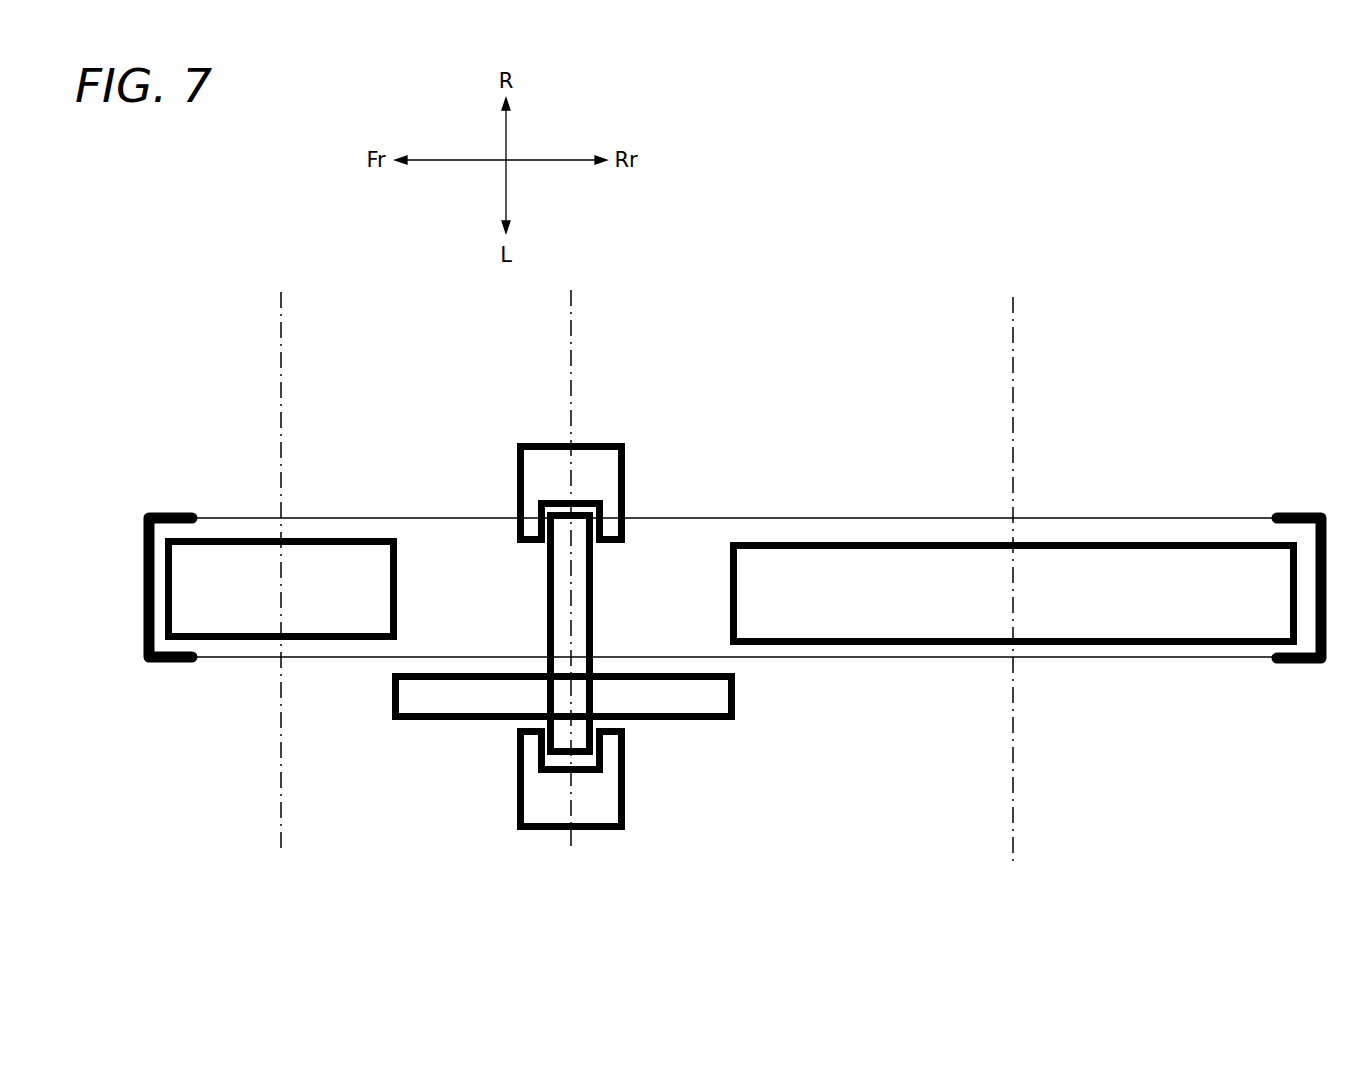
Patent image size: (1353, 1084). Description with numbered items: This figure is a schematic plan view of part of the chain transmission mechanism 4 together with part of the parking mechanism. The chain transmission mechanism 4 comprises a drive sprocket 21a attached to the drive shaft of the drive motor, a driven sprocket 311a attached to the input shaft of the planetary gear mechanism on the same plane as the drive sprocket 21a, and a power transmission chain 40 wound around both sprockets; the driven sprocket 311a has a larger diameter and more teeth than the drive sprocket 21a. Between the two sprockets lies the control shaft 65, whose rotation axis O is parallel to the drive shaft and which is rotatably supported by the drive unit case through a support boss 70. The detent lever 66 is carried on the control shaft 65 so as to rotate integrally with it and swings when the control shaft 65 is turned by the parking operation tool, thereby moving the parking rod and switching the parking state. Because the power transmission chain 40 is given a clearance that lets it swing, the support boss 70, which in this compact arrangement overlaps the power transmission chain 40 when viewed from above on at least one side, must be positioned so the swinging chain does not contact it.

The chain transmission mechanism 4 is at (735, 464).
The drive sprocket 21a is at (355, 640).
The driven sprocket 311a is at (1145, 632).
The power transmission chain 40 is at (983, 657).
The control shaft 65 is at (591, 598).
The detent lever 66 is at (700, 715).
The support boss 70 is at (515, 497).
The rotation axis O is at (571, 843).